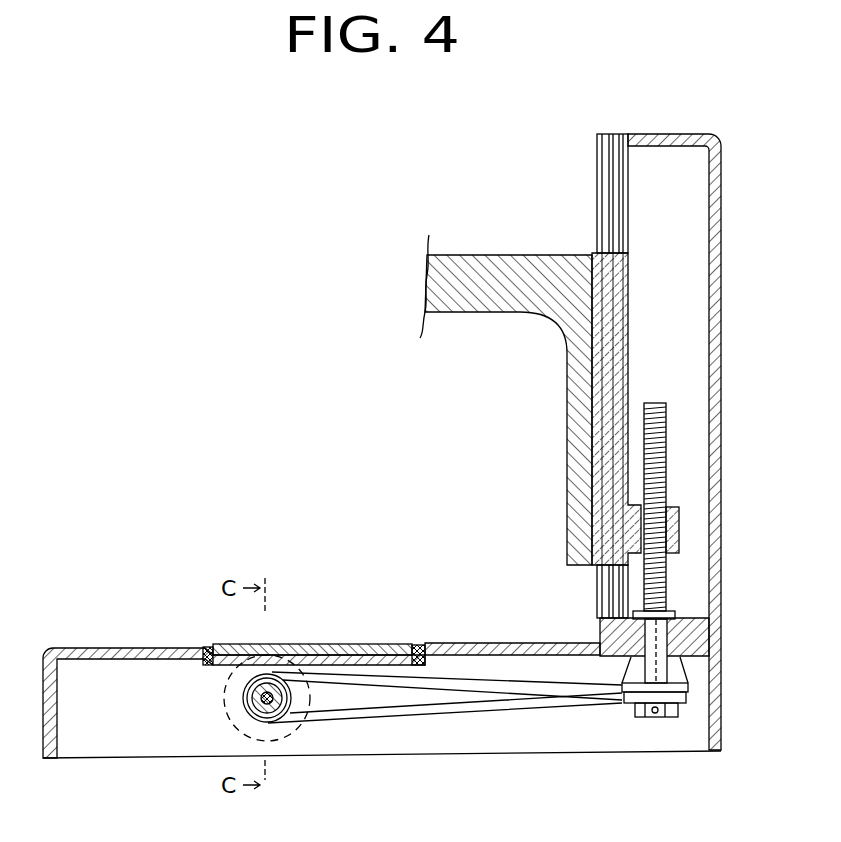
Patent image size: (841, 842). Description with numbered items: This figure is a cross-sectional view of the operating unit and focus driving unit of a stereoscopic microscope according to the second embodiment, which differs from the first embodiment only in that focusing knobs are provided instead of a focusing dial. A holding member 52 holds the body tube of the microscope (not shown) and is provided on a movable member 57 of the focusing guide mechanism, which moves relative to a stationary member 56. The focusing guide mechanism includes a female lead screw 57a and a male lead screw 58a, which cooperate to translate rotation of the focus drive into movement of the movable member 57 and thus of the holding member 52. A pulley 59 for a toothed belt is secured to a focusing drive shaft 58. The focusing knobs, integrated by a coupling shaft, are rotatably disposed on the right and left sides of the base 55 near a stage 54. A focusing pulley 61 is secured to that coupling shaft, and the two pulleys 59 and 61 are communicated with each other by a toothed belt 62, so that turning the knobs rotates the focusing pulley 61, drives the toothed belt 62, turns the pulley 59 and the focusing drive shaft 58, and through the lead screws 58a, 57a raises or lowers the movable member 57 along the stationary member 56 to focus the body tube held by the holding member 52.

The holding member 52 is at (478, 285).
The stage 54 is at (352, 650).
The base 55 is at (152, 648).
The stationary member 56 is at (598, 185).
The movable member 57 is at (593, 434).
The female lead screw 57a is at (680, 523).
The focusing drive shaft 58 is at (680, 642).
The male lead screw 58a is at (665, 453).
The pulley 59 is at (630, 720).
The focusing pulley 61 is at (272, 680).
The toothed belt 62 is at (475, 715).